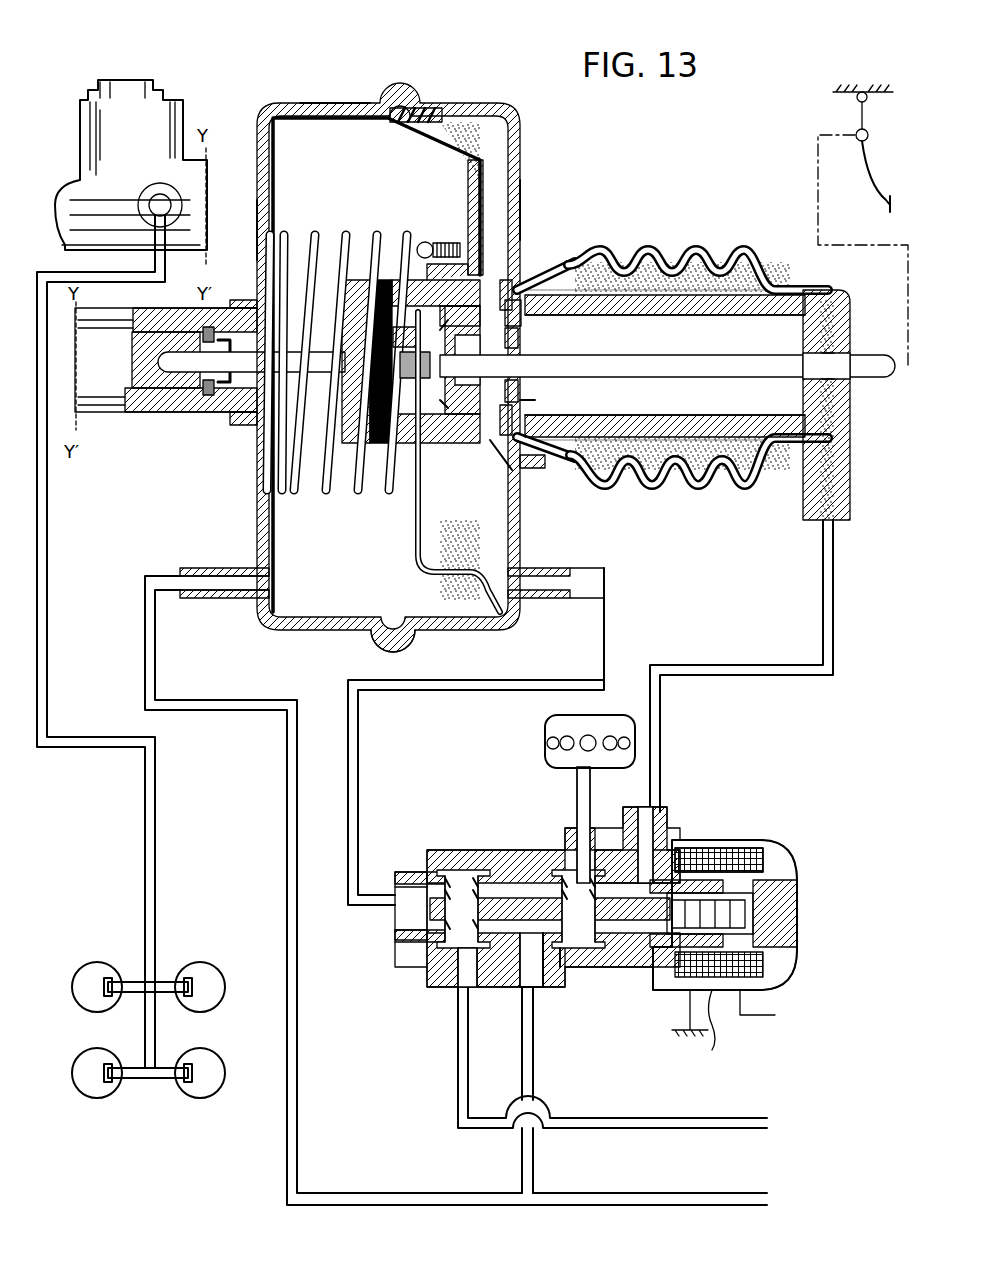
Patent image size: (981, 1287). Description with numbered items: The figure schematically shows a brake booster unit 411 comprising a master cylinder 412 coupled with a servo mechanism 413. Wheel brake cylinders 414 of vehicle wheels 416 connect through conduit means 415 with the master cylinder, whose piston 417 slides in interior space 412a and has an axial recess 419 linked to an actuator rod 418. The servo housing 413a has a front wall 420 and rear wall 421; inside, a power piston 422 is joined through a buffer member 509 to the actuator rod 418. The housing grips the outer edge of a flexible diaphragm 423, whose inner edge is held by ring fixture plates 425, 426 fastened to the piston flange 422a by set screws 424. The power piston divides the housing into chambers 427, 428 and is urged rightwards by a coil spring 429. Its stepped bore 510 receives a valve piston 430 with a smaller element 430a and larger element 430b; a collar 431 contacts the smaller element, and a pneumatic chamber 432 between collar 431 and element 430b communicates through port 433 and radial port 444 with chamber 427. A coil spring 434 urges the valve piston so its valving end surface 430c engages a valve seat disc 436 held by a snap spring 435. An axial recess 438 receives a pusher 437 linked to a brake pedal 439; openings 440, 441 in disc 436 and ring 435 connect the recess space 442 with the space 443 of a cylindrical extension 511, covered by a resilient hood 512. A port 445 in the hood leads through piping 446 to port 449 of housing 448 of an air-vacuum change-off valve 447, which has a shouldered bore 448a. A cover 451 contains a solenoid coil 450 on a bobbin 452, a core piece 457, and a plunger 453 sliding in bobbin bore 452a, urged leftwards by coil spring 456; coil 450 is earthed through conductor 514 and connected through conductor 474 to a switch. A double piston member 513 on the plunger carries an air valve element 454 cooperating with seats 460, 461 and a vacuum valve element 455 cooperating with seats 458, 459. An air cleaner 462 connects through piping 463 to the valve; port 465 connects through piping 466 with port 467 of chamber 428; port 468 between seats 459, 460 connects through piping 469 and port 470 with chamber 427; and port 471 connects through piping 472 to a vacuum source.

The brake booster unit 411 is at (575, 262).
The master cylinder 412 is at (217, 74).
The interior space 412a is at (185, 318).
The servo mechanism 413 is at (289, 74).
The housing 413a is at (332, 110).
The wheel brake cylinders 414 is at (105, 1000).
The conduit means 415 is at (150, 635).
The vehicle wheels 416 is at (200, 965).
The piston 417 is at (172, 392).
The actuator rod 418 is at (262, 305).
The deep axial recess 419 is at (208, 398).
The front wall 420 is at (262, 190).
The rear wall 421 is at (512, 175).
The power piston 422 is at (330, 480).
The flange 422a is at (430, 470).
The flexible diaphragm 423 is at (448, 112).
The set screws 424 is at (418, 248).
The fixture plate 425 is at (440, 262).
The fixture plate 426 is at (500, 186).
The left-hand servo chamber 427 is at (343, 194).
The right-hand servo chamber 428 is at (492, 628).
The coil spring 429 is at (340, 430).
The valve piston 430 is at (384, 445).
The smaller piston element 430a is at (417, 352).
The larger piston element 430b is at (508, 438).
The valving ring end surface 430c is at (520, 338).
The inwardly projecting collar 431 is at (340, 440).
The pneumatic chamber 432 is at (448, 400).
The port 433 is at (455, 420).
The coil spring 434 is at (508, 280).
The snap spring 435 is at (562, 272).
The valve seat disc 436 is at (512, 300).
The pusher 437 is at (760, 350).
The deep axial recess 438 is at (645, 350).
The brake pedal 439 is at (868, 175).
The central opening 440 is at (520, 392).
The central opening 441 is at (530, 402).
The interior space 442 is at (556, 465).
The interior space 443 is at (723, 412).
The radial port 444 is at (512, 470).
The port 445 is at (835, 445).
The piping 446 is at (825, 608).
The air-vacuum change-off valve 447 is at (770, 810).
The housing 448 is at (508, 870).
The multi-shouldered axial bore 448a is at (532, 985).
The port 449 is at (648, 830).
The stationary solenoid coil 450 is at (740, 850).
The cover 451 is at (758, 912).
The bobbin 452 is at (770, 870).
The axial bore 452a is at (688, 858).
The electromagnetic plunger 453 is at (732, 1021).
The valve element 454 is at (565, 950).
The valve element 455 is at (420, 912).
The coil spring 456 is at (740, 925).
The core piece 457 is at (775, 895).
The valve seat 458 is at (425, 875).
The valve seat 459 is at (462, 876).
The valve seat 460 is at (550, 898).
The valve seat 461 is at (590, 845).
The air cleaner 462 is at (542, 730).
The piping 463 is at (575, 800).
The port 465 is at (420, 950).
The piping 466 is at (505, 682).
The port 467 is at (560, 580).
The port 468 is at (538, 965).
The piping 469 is at (345, 1195).
The port 470 is at (235, 600).
The port 471 is at (458, 975).
The piping 472 is at (458, 1090).
The conductor 474 is at (775, 1015).
The buffer member 509 is at (290, 300).
The stepped bore 510 is at (465, 322).
The hollow cylindrical extension 511 is at (685, 295).
The resilient hood 512 is at (672, 470).
The double piston member 513 is at (520, 985).
The conductor 514 is at (690, 1000).